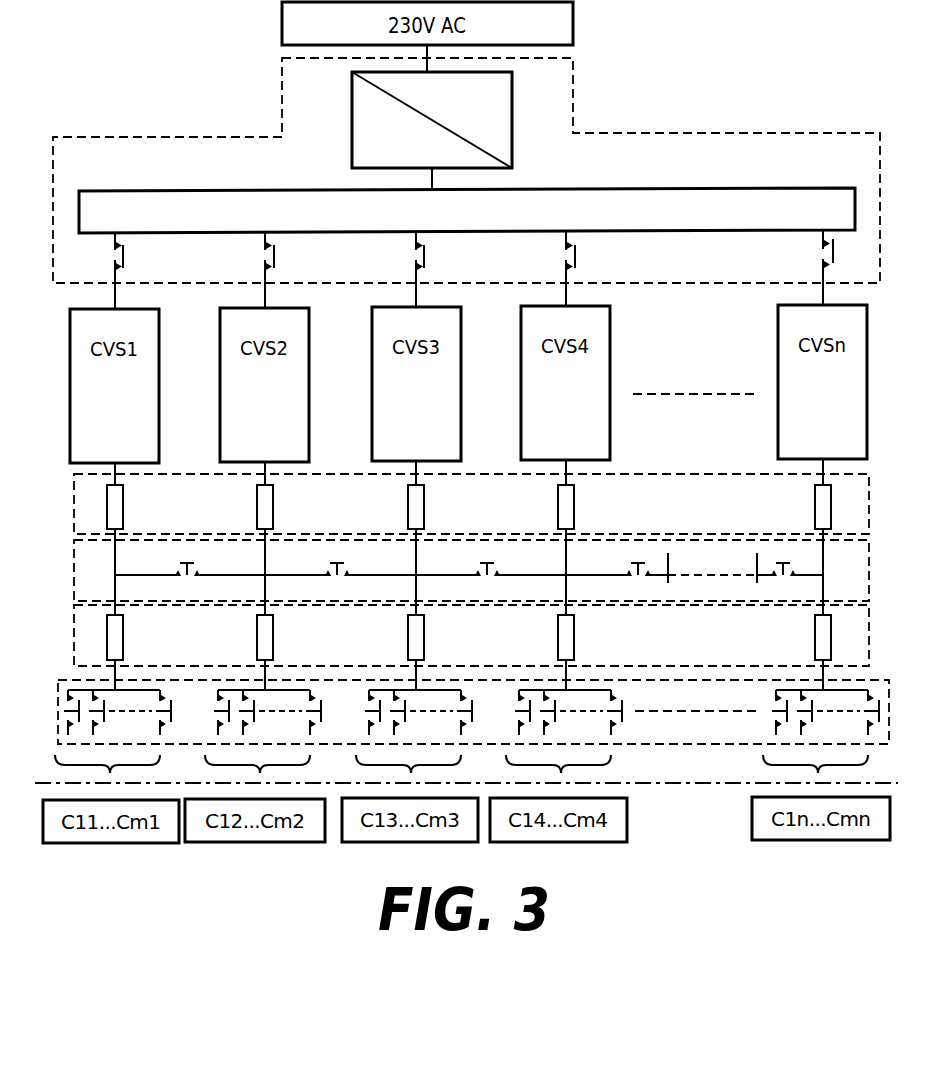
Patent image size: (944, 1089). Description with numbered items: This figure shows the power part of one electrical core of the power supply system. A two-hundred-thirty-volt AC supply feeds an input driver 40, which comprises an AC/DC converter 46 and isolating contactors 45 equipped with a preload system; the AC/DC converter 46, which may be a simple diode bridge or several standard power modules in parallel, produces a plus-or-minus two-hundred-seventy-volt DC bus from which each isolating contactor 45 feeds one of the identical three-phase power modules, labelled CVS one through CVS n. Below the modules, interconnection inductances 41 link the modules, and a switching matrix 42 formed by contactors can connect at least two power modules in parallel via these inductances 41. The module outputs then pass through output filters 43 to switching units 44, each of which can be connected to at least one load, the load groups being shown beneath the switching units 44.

The input driver 40 is at (650, 135).
The inductances 41 is at (207, 516).
The switching matrix 42 is at (308, 548).
The output filters 43 is at (207, 648).
The switching units 44 is at (335, 685).
The isolating contactors 45 is at (274, 257).
The AC/DC converter 46 is at (512, 143).